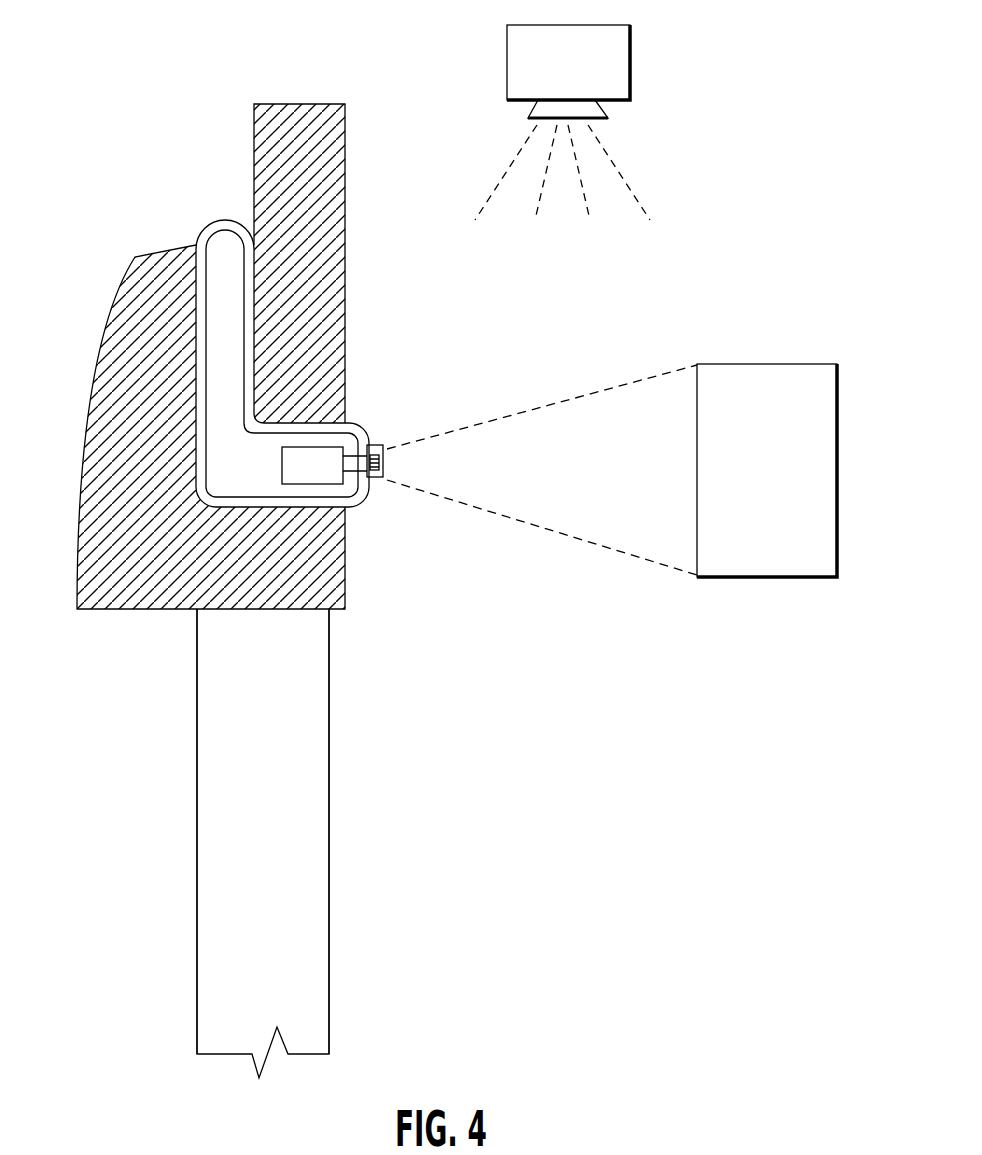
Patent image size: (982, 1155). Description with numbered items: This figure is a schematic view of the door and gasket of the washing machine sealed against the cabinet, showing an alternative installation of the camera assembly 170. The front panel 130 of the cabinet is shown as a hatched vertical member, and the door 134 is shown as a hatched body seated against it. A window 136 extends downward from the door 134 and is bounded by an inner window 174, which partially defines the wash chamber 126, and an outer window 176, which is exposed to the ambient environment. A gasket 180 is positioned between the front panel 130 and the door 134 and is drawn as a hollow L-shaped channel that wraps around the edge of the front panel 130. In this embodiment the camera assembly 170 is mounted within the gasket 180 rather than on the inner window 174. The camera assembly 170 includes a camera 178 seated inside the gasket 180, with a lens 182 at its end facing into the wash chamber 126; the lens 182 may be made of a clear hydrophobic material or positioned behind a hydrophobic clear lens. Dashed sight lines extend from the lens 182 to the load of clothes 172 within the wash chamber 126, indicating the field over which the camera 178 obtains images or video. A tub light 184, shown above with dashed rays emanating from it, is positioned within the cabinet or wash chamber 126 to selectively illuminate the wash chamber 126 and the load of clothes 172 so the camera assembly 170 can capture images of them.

The wash chamber 126 is at (473, 786).
The front panel 130 is at (346, 168).
The door 134 is at (103, 375).
The window 136 is at (275, 786).
The camera assembly 170 is at (403, 414).
The load of clothes 172 is at (783, 476).
The inner window 174 is at (329, 717).
The outer window 176 is at (197, 733).
The camera 178 is at (312, 465).
The gasket 180 is at (348, 422).
The lens 182 is at (384, 455).
The tub light 184 is at (584, 79).